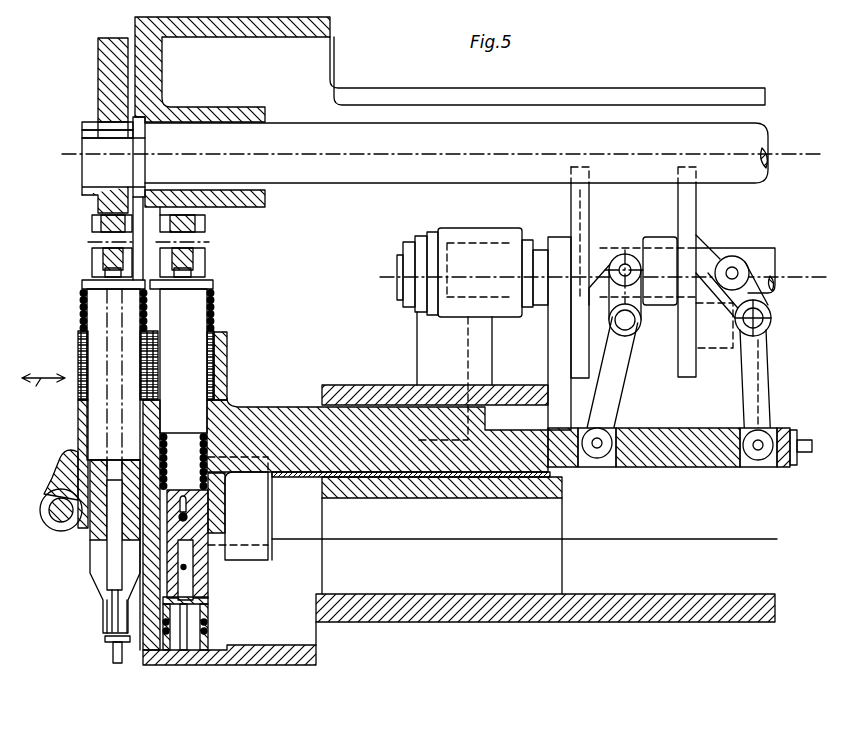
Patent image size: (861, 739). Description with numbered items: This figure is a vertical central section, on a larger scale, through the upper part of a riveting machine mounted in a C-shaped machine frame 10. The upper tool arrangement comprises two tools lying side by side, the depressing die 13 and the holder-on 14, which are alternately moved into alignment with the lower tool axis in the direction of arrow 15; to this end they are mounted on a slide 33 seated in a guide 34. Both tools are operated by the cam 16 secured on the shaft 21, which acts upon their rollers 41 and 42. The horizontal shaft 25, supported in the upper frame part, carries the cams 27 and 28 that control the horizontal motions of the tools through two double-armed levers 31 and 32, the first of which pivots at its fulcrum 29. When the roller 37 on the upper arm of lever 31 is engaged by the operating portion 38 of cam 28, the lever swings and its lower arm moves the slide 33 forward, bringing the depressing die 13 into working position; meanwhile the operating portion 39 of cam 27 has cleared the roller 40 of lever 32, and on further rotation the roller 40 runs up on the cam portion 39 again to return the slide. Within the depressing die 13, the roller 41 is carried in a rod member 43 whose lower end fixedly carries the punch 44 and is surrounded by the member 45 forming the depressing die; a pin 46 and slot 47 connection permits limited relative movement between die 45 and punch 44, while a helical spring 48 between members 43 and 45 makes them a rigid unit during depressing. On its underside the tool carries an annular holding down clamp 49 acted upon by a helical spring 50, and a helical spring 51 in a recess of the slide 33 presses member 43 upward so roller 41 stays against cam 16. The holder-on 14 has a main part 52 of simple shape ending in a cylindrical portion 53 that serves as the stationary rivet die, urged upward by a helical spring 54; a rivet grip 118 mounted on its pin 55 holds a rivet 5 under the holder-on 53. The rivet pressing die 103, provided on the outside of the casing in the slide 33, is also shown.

The rivet 5 is at (113, 653).
The machine frame 10 is at (511, 611).
The depressing die 13 is at (192, 316).
The holder-on 14 is at (97, 306).
The arrow 15 is at (43, 393).
The cam 16 is at (107, 77).
The shaft 21 is at (398, 132).
The horizontal shaft 25 is at (765, 253).
The cam 27 is at (571, 202).
The cam 28 is at (680, 211).
The fulcrum 29 is at (771, 318).
The double-armed lever 31 is at (768, 358).
The double-armed lever 32 is at (623, 384).
The slide 33 is at (300, 420).
The guide 34 is at (370, 393).
The roller 37 is at (739, 258).
The operating portion 38 is at (720, 335).
The operating portion 39 is at (596, 262).
The roller 40 is at (612, 262).
The roller 41 is at (205, 266).
The roller 42 is at (95, 258).
The rod member 43 is at (196, 412).
The punch 44 is at (206, 618).
The depressing die 45 is at (210, 599).
The pin 46 is at (190, 517).
The slot 47 is at (203, 504).
The helical spring 48 is at (210, 440).
The holding down clamp 49 is at (210, 650).
The helical spring 50 is at (210, 629).
The helical spring 51 is at (214, 358).
The main part 52 is at (96, 556).
The cylindrical portion 53 is at (106, 619).
The helical spring 54 is at (82, 327).
The pin 55 is at (96, 510).
The rivet pressing die 103 is at (54, 504).
The rivet grip 118 is at (113, 591).